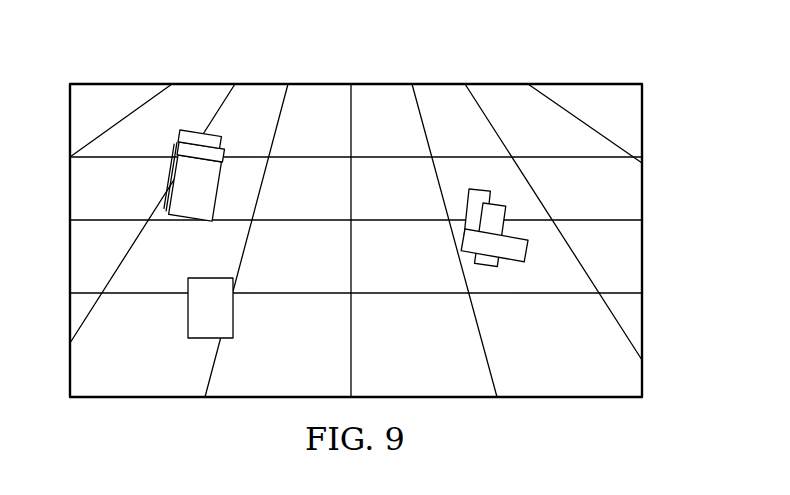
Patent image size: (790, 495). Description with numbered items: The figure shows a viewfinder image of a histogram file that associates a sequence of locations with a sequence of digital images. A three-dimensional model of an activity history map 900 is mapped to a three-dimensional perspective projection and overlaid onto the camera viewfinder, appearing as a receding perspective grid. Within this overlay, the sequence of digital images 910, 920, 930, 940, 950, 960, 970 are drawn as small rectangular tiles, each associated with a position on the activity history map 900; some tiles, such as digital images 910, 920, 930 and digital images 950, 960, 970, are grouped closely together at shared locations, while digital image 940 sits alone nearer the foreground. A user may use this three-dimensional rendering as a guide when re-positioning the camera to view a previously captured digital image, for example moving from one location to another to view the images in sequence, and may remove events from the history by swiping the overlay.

The activity history map 900 is at (503, 84).
The digital image 910 is at (180, 129).
The digital image 920 is at (224, 150).
The digital image 930 is at (219, 186).
The digital image 940 is at (188, 315).
The digital image 950 is at (510, 266).
The digital image 960 is at (506, 205).
The digital image 970 is at (478, 187).